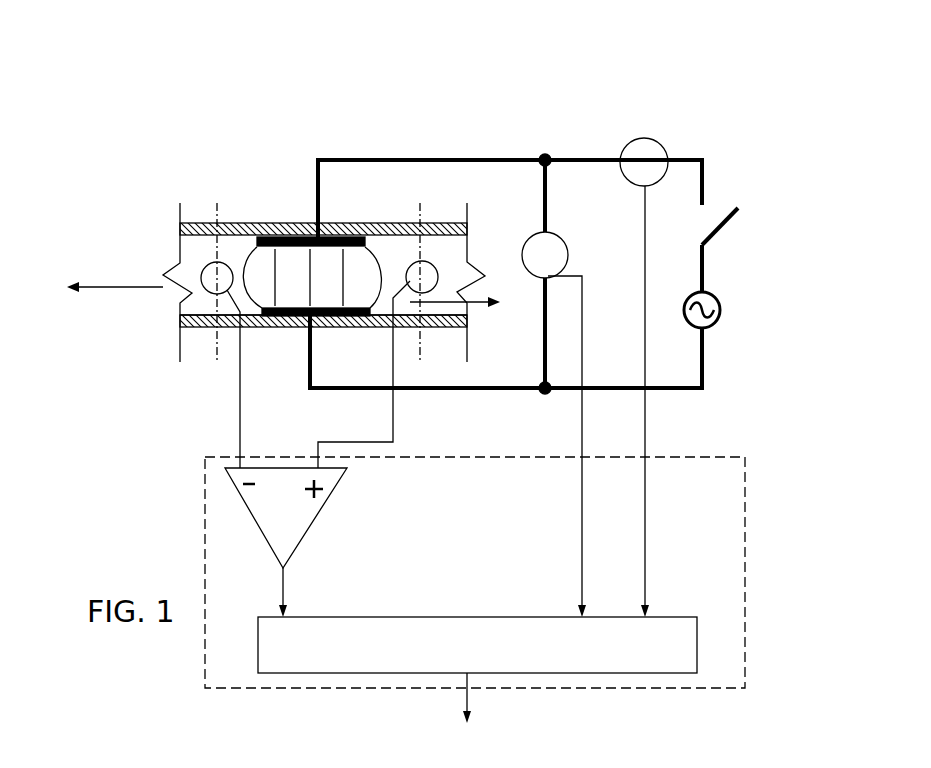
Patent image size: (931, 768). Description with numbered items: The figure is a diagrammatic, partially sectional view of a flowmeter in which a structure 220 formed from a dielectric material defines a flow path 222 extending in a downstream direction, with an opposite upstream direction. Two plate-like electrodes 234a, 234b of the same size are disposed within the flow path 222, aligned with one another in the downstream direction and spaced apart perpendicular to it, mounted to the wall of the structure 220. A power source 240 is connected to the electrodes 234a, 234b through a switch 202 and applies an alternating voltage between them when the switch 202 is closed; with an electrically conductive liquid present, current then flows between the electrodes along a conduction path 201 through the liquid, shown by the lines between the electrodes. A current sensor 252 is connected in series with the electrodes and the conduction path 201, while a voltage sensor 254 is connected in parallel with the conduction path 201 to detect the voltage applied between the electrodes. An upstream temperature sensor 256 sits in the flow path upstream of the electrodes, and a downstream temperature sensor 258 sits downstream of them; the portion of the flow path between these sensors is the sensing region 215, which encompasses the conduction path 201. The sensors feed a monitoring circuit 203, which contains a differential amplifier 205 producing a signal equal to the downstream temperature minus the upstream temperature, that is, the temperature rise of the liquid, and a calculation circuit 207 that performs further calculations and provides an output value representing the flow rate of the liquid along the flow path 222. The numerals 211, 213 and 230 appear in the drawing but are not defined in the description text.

The conduction path 201 is at (425, 205).
The switch 202 is at (728, 225).
The monitoring circuit 203 is at (743, 528).
The differential amplifier 205 is at (277, 518).
The calculation circuit 207 is at (335, 633).
The lower pipe wall 211 is at (215, 338).
The gas bubble 213 is at (382, 240).
The sensing region 215 is at (246, 311).
The structure 220 is at (260, 205).
The flow path 222 is at (178, 222).
The upstream temperature sensor 230 is at (232, 258).
The electrode 234a is at (343, 238).
The electrode 234b is at (340, 318).
The power source 240 is at (722, 308).
The current sensor 252 is at (655, 155).
The voltage sensor 254 is at (557, 236).
The upstream temperature sensor 256 is at (216, 293).
The downstream temperature sensor 258 is at (421, 293).